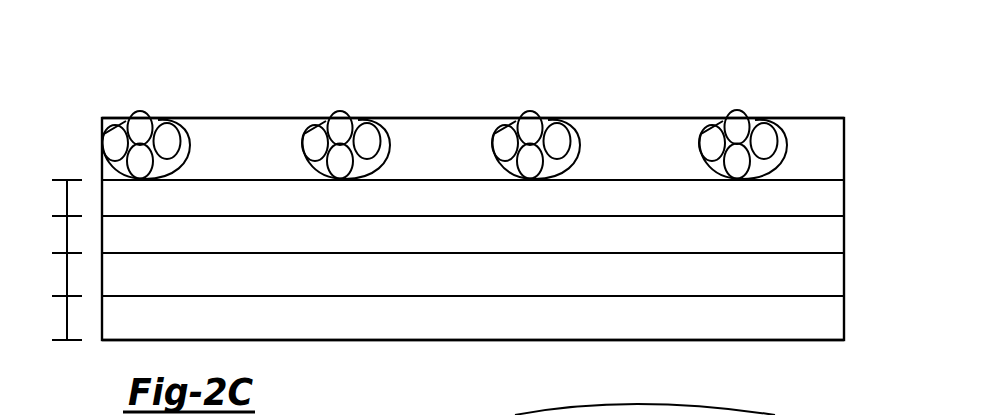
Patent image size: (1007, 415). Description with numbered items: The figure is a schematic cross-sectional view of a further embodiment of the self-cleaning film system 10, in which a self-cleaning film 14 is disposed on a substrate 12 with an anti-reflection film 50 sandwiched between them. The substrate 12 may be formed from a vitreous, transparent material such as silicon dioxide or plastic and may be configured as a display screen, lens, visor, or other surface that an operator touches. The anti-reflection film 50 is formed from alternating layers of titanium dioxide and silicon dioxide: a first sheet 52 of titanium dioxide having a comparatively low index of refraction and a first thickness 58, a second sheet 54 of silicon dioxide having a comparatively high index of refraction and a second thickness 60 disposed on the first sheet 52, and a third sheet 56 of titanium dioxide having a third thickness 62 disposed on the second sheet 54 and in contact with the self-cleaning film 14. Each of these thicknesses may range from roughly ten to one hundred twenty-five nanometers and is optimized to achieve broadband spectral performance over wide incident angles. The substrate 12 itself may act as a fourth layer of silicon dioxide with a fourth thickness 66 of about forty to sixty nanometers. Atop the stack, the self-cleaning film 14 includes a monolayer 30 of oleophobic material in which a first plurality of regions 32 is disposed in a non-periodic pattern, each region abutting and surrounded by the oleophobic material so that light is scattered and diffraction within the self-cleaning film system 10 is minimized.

The self-cleaning film system 10 is at (115, 62).
The substrate 12 is at (838, 315).
The self-cleaning film 14 is at (638, 135).
The monolayer 30 is at (778, 413).
The first plurality of regions 32 is at (329, 95).
The anti-reflection film 50 is at (525, 256).
The first sheet 52 is at (838, 275).
The second sheet 54 is at (838, 233).
The third sheet 56 is at (838, 196).
The first thickness 58 is at (57, 274).
The second thickness 60 is at (57, 234).
The third thickness 62 is at (57, 198).
The fourth thickness 66 is at (57, 318).